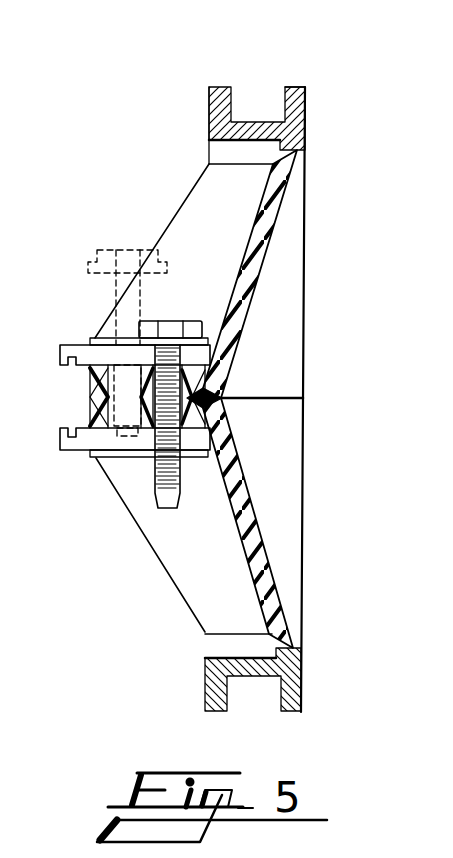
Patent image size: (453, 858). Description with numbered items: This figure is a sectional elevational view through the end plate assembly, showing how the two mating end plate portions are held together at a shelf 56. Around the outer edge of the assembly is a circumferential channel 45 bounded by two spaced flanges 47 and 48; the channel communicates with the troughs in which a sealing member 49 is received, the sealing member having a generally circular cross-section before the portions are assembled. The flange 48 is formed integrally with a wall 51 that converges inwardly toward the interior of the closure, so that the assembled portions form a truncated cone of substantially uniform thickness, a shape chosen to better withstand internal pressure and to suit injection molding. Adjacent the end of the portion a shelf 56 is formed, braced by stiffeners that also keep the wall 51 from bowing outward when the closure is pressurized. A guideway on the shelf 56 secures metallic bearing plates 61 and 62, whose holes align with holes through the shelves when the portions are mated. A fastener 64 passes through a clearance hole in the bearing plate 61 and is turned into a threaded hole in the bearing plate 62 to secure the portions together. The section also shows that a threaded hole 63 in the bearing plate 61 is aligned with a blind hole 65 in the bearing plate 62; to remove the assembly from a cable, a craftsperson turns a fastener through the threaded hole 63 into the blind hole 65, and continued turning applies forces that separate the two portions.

The circumferential channel 45 is at (263, 97).
The flange 47 is at (208, 97).
The flange 48 is at (307, 95).
The sealing member 49 is at (229, 366).
The wall 51 is at (293, 272).
The shelf 56 is at (90, 415).
The bearing plate 61 is at (60, 343).
The bearing plate 62 is at (66, 454).
The threaded hole 63 is at (112, 348).
The fastener 64 is at (173, 322).
The blind hole 65 is at (104, 457).